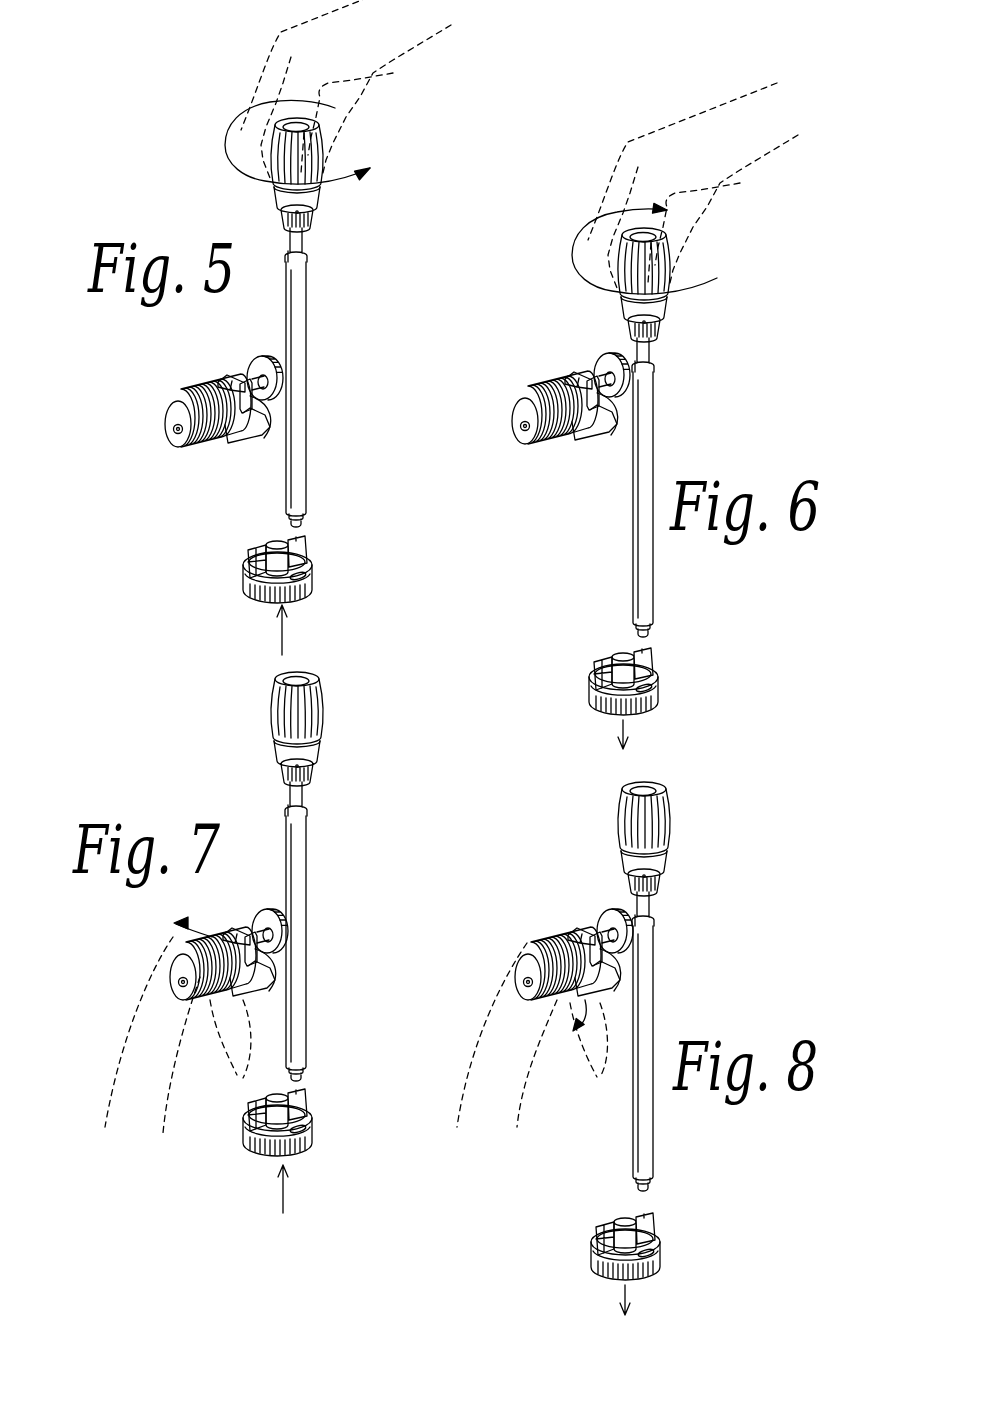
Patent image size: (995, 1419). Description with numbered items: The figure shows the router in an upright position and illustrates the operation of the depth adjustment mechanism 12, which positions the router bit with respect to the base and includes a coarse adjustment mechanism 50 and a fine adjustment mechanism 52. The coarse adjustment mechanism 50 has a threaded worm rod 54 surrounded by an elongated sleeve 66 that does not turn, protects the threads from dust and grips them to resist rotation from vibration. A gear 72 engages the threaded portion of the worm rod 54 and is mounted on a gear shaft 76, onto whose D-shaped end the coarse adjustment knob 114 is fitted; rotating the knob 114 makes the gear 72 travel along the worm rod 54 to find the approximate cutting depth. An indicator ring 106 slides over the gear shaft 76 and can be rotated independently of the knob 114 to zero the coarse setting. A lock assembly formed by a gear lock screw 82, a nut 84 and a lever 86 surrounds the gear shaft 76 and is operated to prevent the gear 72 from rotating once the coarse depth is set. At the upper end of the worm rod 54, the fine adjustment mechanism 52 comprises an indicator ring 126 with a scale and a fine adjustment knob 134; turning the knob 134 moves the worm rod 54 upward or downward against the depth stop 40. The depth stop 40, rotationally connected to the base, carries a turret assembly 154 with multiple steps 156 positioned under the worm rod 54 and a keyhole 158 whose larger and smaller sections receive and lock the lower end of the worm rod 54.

In FIG. 5, the depth adjustment mechanism 12 is at (161, 539).
In FIG. 6, the depth adjustment mechanism 12 is at (581, 533).
In FIG. 7, the depth adjustment mechanism 12 is at (232, 1181).
In FIG. 8, the depth adjustment mechanism 12 is at (554, 1171).
In FIG. 5, the depth stop 40 is at (316, 591).
In FIG. 6, the depth stop 40 is at (662, 702).
In FIG. 7, the depth stop 40 is at (316, 1143).
In FIG. 8, the depth stop 40 is at (662, 1263).
In FIG. 5, the coarse adjustment mechanism 50 is at (168, 455).
In FIG. 6, the coarse adjustment mechanism 50 is at (527, 390).
In FIG. 7, the coarse adjustment mechanism 50 is at (180, 972).
In FIG. 8, the coarse adjustment mechanism 50 is at (469, 1006).
In FIG. 5, the fine adjustment mechanism 52 is at (331, 159).
In FIG. 6, the fine adjustment mechanism 52 is at (677, 271).
In FIG. 7, the fine adjustment mechanism 52 is at (334, 712).
In FIG. 8, the fine adjustment mechanism 52 is at (680, 824).
In FIG. 5, the worm rod 54 is at (302, 236).
In FIG. 6, the worm rod 54 is at (650, 343).
In FIG. 7, the worm rod 54 is at (302, 792).
In FIG. 8, the worm rod 54 is at (648, 905).
In FIG. 5, the elongated sleeve 66 is at (298, 295).
In FIG. 6, the elongated sleeve 66 is at (645, 405).
In FIG. 7, the elongated sleeve 66 is at (300, 853).
In FIG. 8, the elongated sleeve 66 is at (648, 965).
In FIG. 5, the gear 72 is at (272, 357).
In FIG. 6, the gear 72 is at (612, 355).
In FIG. 7, the gear 72 is at (273, 910).
In FIG. 8, the gear 72 is at (611, 910).
In FIG. 5, the gear shaft 76 is at (255, 377).
In FIG. 6, the gear shaft 76 is at (602, 372).
In FIG. 7, the gear shaft 76 is at (258, 930).
In FIG. 8, the gear shaft 76 is at (603, 930).
In FIG. 5, the gear lock screw 82 is at (263, 412).
In FIG. 6, the gear lock screw 82 is at (612, 410).
In FIG. 7, the gear lock screw 82 is at (263, 938).
In FIG. 8, the gear lock screw 82 is at (604, 957).
In FIG. 5, the nut 84 is at (233, 380).
In FIG. 6, the nut 84 is at (580, 378).
In FIG. 7, the nut 84 is at (238, 933).
In FIG. 8, the nut 84 is at (583, 932).
In FIG. 5, the lever 86 is at (236, 432).
In FIG. 6, the lever 86 is at (582, 431).
In FIG. 7, the lever 86 is at (250, 982).
In FIG. 8, the lever 86 is at (613, 990).
In FIG. 5, the indicator ring 106 is at (217, 392).
In FIG. 6, the indicator ring 106 is at (562, 390).
In FIG. 7, the indicator ring 106 is at (220, 945).
In FIG. 8, the indicator ring 106 is at (565, 944).
In FIG. 5, the coarse adjustment knob 114 is at (176, 418).
In FIG. 6, the coarse adjustment knob 114 is at (523, 416).
In FIG. 7, the coarse adjustment knob 114 is at (181, 971).
In FIG. 8, the coarse adjustment knob 114 is at (526, 971).
In FIG. 5, the indicator ring 126 is at (309, 196).
In FIG. 6, the indicator ring 126 is at (657, 305).
In FIG. 7, the indicator ring 126 is at (320, 740).
In FIG. 8, the indicator ring 126 is at (657, 867).
In FIG. 5, the fine adjustment knob 134 is at (274, 136).
In FIG. 6, the fine adjustment knob 134 is at (621, 250).
In FIG. 7, the fine adjustment knob 134 is at (274, 692).
In FIG. 8, the fine adjustment knob 134 is at (621, 808).
In FIG. 5, the turret assembly 154 is at (254, 552).
In FIG. 6, the turret assembly 154 is at (602, 662).
In FIG. 7, the turret assembly 154 is at (257, 1104).
In FIG. 8, the turret assembly 154 is at (602, 1230).
In FIG. 5, the steps 156 is at (264, 536).
In FIG. 6, the steps 156 is at (611, 648).
In FIG. 7, the steps 156 is at (267, 1089).
In FIG. 8, the steps 156 is at (612, 1218).
In FIG. 5, the keyhole 158 is at (306, 570).
In FIG. 6, the keyhole 158 is at (655, 683).
In FIG. 7, the keyhole 158 is at (309, 1122).
In FIG. 8, the keyhole 158 is at (655, 1247).